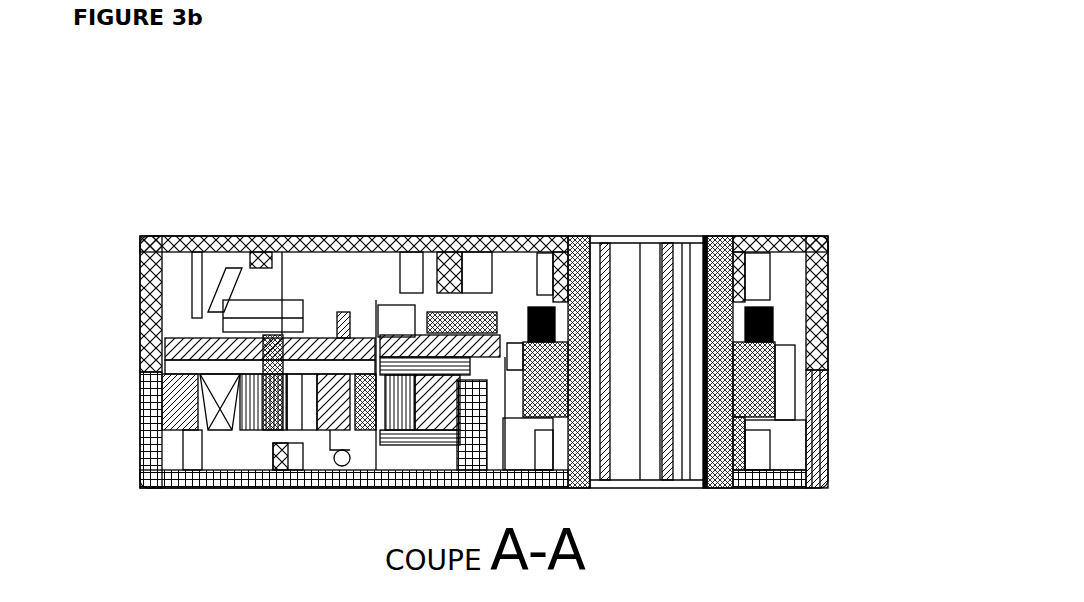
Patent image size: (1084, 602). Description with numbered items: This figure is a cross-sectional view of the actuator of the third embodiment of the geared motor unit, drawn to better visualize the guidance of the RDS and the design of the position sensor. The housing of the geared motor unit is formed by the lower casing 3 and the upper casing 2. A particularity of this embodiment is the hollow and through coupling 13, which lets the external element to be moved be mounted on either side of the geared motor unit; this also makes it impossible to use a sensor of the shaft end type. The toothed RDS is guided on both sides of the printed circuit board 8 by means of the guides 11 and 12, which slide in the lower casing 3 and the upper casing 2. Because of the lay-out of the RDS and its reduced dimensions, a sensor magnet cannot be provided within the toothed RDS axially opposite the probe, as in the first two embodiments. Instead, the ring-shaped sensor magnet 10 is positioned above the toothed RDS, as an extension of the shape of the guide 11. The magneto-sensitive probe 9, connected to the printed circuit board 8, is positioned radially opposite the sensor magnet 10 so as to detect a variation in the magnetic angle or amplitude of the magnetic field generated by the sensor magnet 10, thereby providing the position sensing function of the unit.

The upper casing 2 is at (148, 410).
The lower casing 3 is at (148, 293).
The printed circuit board 8 is at (393, 337).
The magneto-sensitive probe 9 is at (440, 315).
The sensor magnet 10 is at (542, 307).
The guide 11 is at (732, 272).
The guide 12 is at (730, 450).
The hollow and through coupling 13 is at (648, 277).
The toothed output wheel RDS is at (765, 390).